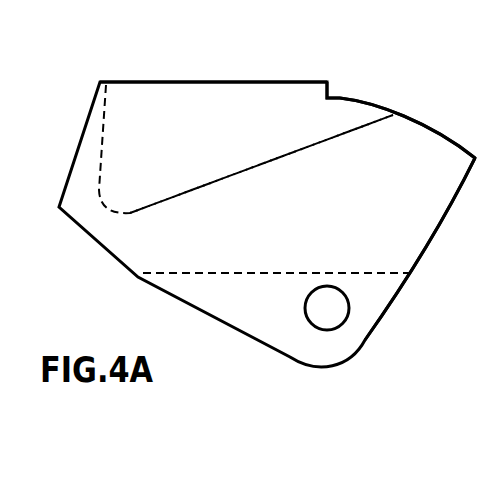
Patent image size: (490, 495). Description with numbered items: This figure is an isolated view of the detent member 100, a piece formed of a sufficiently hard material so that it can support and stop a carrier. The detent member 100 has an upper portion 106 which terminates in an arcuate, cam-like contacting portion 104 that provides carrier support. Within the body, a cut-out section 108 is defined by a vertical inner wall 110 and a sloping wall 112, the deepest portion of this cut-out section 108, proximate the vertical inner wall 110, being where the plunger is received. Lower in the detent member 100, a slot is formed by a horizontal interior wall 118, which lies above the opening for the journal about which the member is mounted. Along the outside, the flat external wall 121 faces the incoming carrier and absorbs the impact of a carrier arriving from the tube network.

The detent member 100 is at (320, 212).
The arcuate, cam-like contacting portion 104 is at (432, 127).
The upper portion 106 is at (205, 80).
The cut-out section 108 is at (263, 157).
The vertical inner wall 110 is at (104, 78).
The sloping wall 112 is at (338, 130).
The horizontal interior wall 118 is at (380, 273).
The flat external wall 121 is at (444, 213).